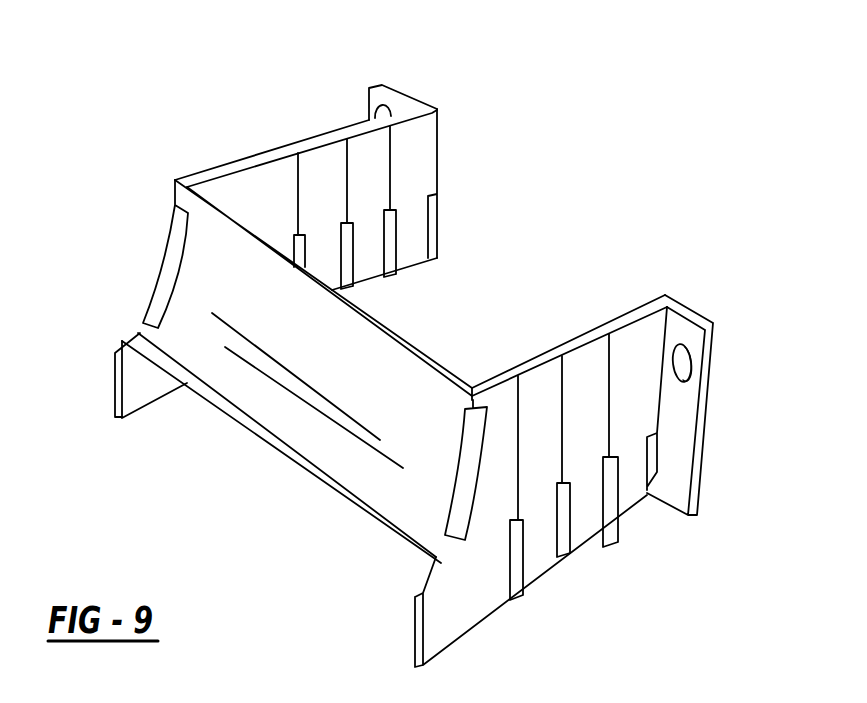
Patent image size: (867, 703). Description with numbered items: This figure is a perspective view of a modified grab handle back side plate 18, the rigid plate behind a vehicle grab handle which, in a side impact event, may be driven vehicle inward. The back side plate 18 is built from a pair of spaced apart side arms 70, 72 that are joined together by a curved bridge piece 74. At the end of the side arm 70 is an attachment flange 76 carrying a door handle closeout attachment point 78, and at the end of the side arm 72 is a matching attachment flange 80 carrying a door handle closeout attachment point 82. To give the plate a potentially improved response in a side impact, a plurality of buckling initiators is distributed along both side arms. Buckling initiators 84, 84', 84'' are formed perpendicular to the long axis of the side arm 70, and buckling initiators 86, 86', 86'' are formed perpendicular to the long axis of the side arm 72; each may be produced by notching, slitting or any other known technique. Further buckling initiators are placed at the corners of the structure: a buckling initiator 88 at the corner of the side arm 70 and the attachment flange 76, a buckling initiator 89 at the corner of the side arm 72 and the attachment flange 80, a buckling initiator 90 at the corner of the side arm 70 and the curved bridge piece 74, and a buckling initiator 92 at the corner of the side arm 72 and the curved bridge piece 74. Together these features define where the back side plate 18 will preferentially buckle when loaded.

The grab handle back side plate 18 is at (233, 160).
The side arm 70 is at (263, 152).
The side arm 72 is at (498, 363).
The curved bridge piece 74 is at (275, 407).
The attachment flange 76 is at (377, 100).
The door handle closeout attachment point 78 is at (383, 110).
The attachment flange 80 is at (682, 327).
The door handle closeout attachment point 82 is at (692, 370).
The buckling initiator 84 is at (204, 210).
The buckling initiator 84' is at (417, 221).
The buckling initiator 84'' is at (455, 178).
The buckling initiator 86 is at (542, 511).
The buckling initiator 86' is at (605, 488).
The buckling initiator 86'' is at (670, 455).
The buckling initiator 88 is at (440, 223).
The buckling initiator 89 is at (652, 470).
The buckling initiator 90 is at (155, 292).
The buckling initiator 92 is at (476, 520).